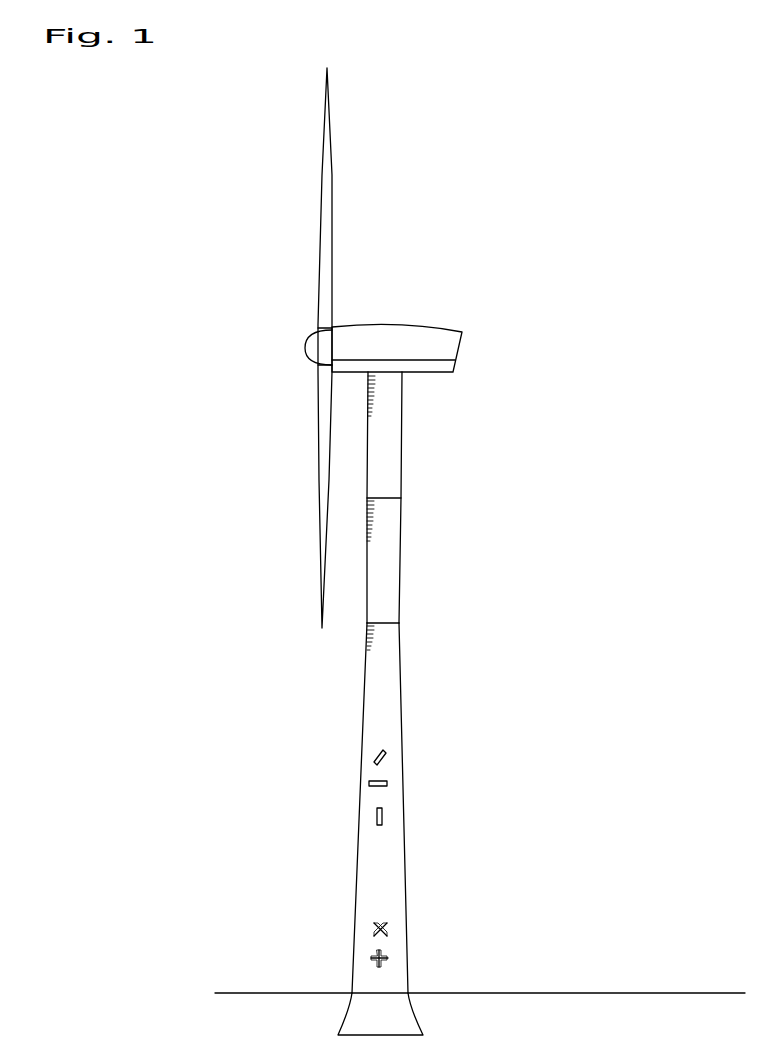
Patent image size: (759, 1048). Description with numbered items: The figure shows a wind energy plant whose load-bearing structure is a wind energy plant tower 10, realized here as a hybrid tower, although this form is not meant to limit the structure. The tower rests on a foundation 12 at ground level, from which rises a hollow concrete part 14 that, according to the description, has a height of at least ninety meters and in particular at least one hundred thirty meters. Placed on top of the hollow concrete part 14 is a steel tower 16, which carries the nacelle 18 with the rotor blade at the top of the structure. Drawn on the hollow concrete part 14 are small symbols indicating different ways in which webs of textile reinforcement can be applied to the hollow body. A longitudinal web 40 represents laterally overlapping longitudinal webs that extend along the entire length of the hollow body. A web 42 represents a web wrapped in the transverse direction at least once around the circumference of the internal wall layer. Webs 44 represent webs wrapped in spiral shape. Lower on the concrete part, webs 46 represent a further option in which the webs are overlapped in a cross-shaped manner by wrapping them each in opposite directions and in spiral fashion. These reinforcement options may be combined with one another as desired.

The wind energy plant tower 10 is at (583, 628).
The foundation 12 is at (408, 1023).
The hollow concrete part 14 is at (390, 883).
The steel tower 16 is at (390, 523).
The nacelle 18 is at (443, 345).
The longitudinal web 40 is at (388, 813).
The web 42 is at (388, 782).
The webs 44 is at (388, 757).
The webs 46 is at (370, 925).